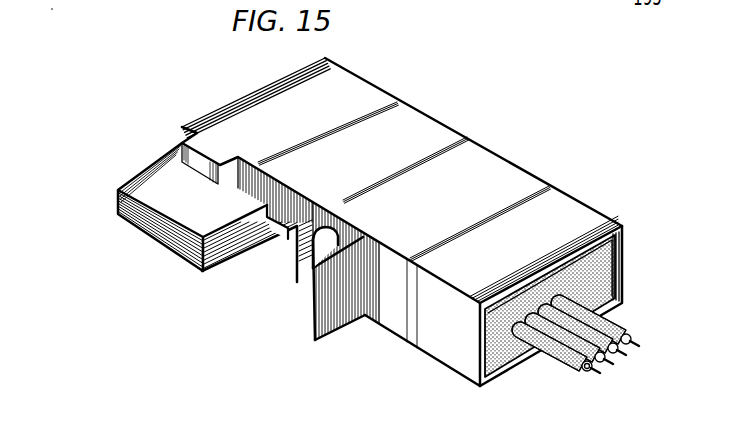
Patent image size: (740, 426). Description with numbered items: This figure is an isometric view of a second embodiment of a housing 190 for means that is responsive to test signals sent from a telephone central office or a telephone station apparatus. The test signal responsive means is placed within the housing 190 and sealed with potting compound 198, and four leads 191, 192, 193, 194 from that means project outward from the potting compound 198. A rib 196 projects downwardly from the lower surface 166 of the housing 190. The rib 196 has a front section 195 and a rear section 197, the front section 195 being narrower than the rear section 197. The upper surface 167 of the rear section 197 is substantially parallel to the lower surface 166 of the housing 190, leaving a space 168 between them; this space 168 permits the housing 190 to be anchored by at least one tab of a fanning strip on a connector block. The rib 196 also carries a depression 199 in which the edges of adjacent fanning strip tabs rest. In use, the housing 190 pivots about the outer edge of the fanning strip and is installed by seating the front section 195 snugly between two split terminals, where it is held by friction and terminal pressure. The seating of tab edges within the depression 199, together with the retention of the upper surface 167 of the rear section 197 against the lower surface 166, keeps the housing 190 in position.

The housing 190 is at (505, 182).
The space 168 is at (335, 212).
The lower surface 166 is at (437, 333).
The rear section 197 is at (347, 302).
The upper surface 167 is at (308, 303).
The potting compound 198 is at (597, 266).
The lead 193 is at (567, 336).
The lead 192 is at (600, 328).
The lead 191 is at (627, 328).
The lead 194 is at (567, 360).
The front section 195 is at (182, 198).
The rib 196 is at (302, 270).
The depression 199 is at (278, 241).